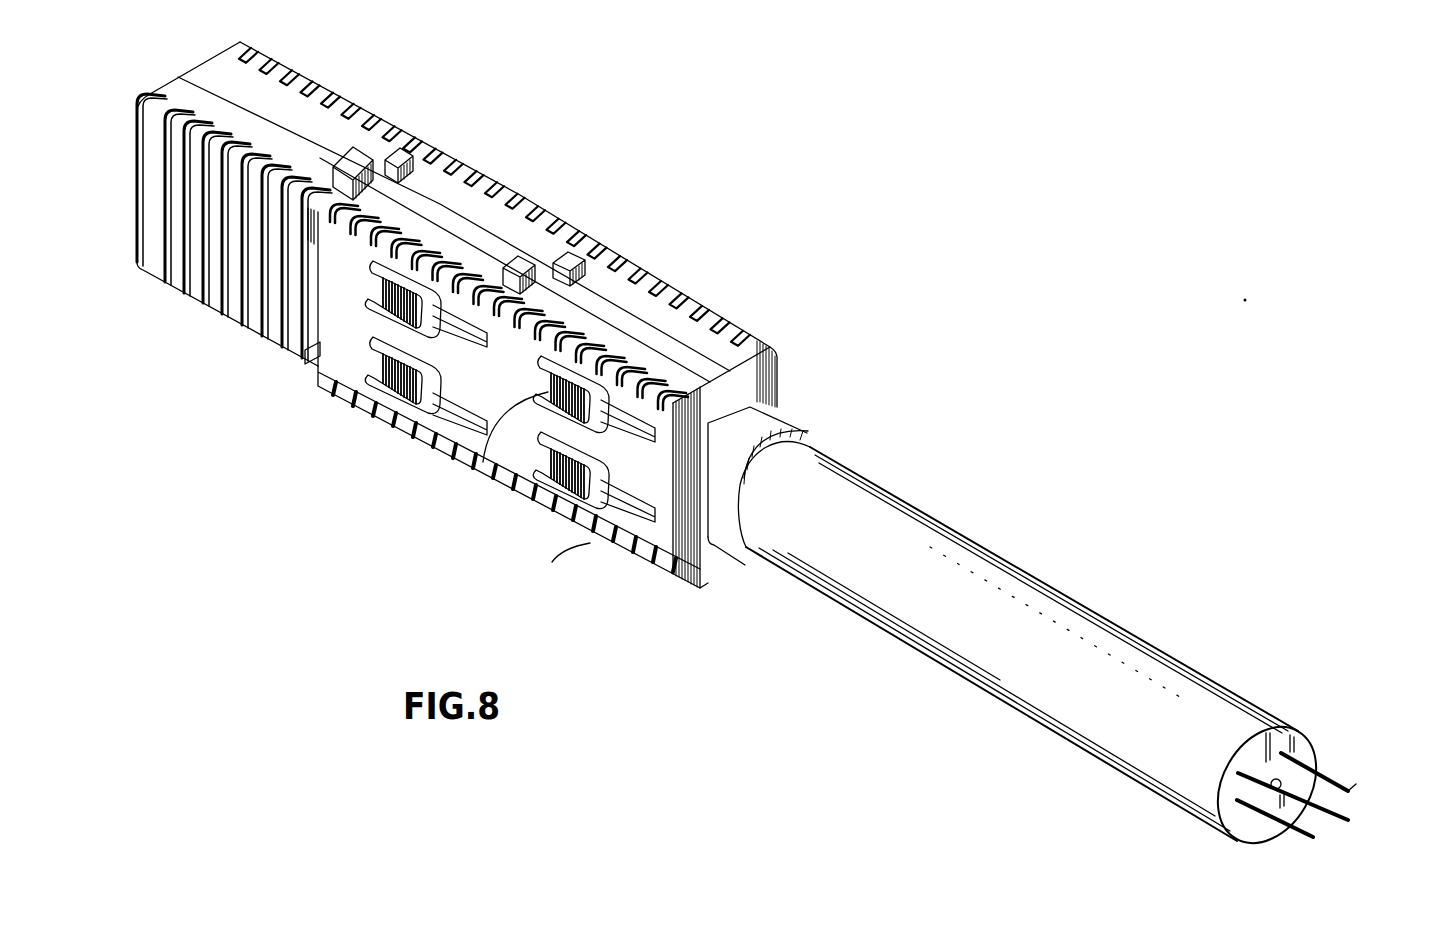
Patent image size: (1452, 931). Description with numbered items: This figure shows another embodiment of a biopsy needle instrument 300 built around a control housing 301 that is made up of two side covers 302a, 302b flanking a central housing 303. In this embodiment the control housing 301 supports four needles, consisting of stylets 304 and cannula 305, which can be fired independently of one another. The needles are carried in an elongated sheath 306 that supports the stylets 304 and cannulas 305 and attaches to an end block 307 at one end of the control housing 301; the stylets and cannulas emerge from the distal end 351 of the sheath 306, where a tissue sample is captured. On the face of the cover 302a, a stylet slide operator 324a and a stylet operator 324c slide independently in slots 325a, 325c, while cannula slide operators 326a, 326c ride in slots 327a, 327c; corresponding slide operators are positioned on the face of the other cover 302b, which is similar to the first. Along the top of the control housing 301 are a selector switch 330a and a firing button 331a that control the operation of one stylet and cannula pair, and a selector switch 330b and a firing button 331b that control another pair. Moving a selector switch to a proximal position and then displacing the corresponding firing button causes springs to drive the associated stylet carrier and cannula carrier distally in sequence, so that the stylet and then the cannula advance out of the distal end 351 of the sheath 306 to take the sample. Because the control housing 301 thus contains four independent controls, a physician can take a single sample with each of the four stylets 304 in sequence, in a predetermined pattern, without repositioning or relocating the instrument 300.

The biopsy needle instrument 300 is at (770, 283).
The control housing 301 is at (653, 280).
The side cover 302a is at (170, 88).
The side cover 302b is at (300, 80).
The central housing 303 is at (193, 67).
The stylets 304 is at (1352, 789).
The cannula 305 is at (1318, 773).
The sheath 306 is at (973, 541).
The end block 307 is at (788, 422).
The stylet slide operator 324a is at (370, 314).
The stylet operator 324c is at (372, 383).
The slot 325a is at (467, 334).
The slot 325c is at (460, 407).
The cannula slide operator 326a is at (537, 398).
The cannula slide operator 326c is at (546, 472).
The slot 327a is at (634, 440).
The slot 327c is at (620, 498).
The selector switch 330a is at (540, 250).
The selector switch 330b is at (567, 252).
The firing button 331a is at (353, 160).
The firing button 331b is at (390, 160).
The distal end 351 is at (1279, 734).